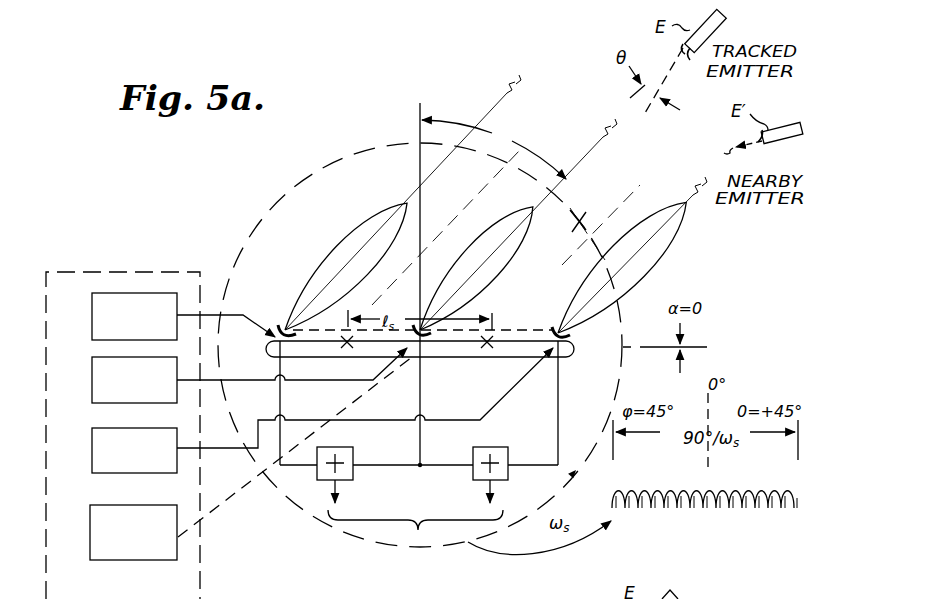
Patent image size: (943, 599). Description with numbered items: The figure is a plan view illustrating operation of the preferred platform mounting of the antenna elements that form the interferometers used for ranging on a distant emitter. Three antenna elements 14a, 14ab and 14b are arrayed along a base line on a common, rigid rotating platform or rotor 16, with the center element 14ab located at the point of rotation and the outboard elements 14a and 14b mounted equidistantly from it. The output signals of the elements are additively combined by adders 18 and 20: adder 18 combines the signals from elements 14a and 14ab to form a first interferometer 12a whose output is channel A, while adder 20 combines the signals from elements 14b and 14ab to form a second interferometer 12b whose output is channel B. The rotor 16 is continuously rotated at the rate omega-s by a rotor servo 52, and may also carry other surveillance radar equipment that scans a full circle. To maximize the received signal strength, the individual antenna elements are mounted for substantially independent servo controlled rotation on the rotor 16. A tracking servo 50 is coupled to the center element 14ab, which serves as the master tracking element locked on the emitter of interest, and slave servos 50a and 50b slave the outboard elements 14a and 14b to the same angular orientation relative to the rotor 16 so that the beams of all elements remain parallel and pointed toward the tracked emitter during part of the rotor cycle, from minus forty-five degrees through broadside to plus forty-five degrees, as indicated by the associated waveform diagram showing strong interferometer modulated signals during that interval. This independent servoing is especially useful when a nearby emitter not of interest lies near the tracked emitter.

The slave servo 50a is at (92, 328).
The tracking servo 50 is at (92, 390).
The slave servo 50b is at (92, 460).
The rotor servo 52 is at (90, 538).
The rotor 16 is at (277, 331).
The antenna element 14a is at (282, 325).
The center antenna element 14ab is at (426, 346).
The antenna element 14b is at (562, 326).
The radio frequency interferometer 12a is at (366, 310).
The radio frequency interferometer 12b is at (549, 249).
The adder 18 is at (324, 482).
The adder 20 is at (472, 477).